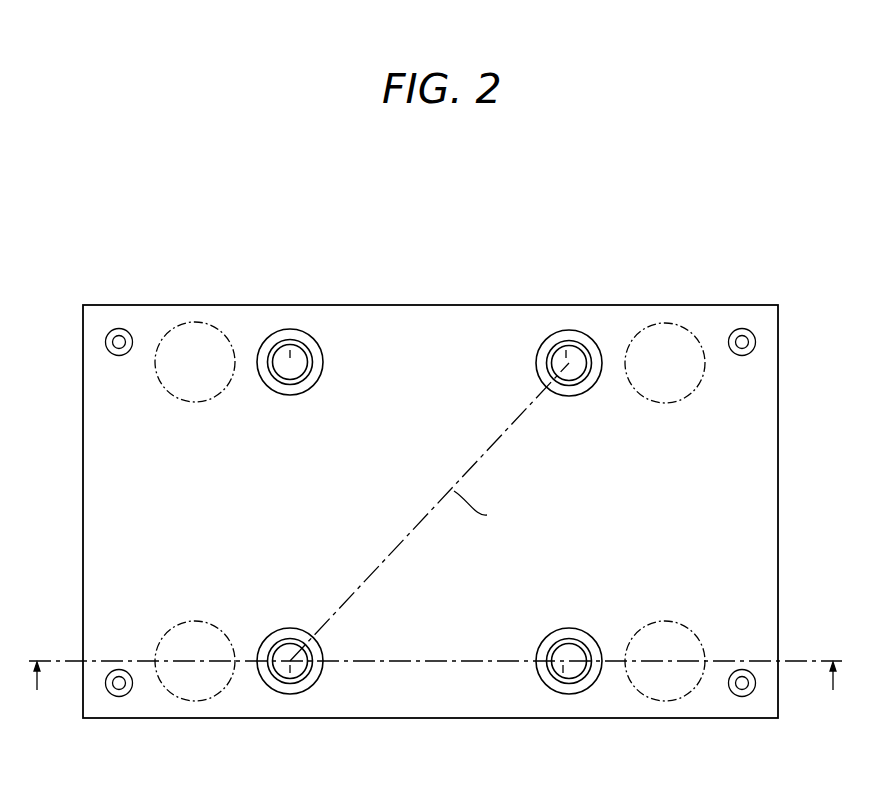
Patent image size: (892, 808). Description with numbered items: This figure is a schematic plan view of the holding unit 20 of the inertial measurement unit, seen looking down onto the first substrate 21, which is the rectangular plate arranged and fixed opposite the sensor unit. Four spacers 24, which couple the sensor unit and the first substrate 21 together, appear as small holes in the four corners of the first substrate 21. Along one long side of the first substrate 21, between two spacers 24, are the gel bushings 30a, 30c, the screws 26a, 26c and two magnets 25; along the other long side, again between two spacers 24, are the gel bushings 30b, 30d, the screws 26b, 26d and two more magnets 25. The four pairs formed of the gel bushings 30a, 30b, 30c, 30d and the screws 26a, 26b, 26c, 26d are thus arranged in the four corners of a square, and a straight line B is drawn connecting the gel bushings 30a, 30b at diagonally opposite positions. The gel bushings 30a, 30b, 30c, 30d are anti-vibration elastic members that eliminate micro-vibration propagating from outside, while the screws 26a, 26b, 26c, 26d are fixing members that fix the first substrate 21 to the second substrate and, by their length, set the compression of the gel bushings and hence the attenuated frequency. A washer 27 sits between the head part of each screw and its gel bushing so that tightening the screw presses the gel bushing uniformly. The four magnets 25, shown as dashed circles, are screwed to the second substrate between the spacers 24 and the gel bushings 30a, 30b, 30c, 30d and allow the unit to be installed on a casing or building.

The holding unit 20 is at (780, 215).
The first substrate 21 is at (428, 305).
The spacers 24 is at (127, 329).
The magnets 25 is at (196, 322).
The screw 26a is at (283, 675).
The screw 26b is at (563, 353).
The screw 26c is at (562, 676).
The screw 26d is at (287, 353).
The washer 27 is at (290, 396).
The gel bushing 30a is at (292, 694).
The gel bushing 30b is at (570, 331).
The gel bushing 30c is at (570, 694).
The gel bushing 30d is at (291, 330).